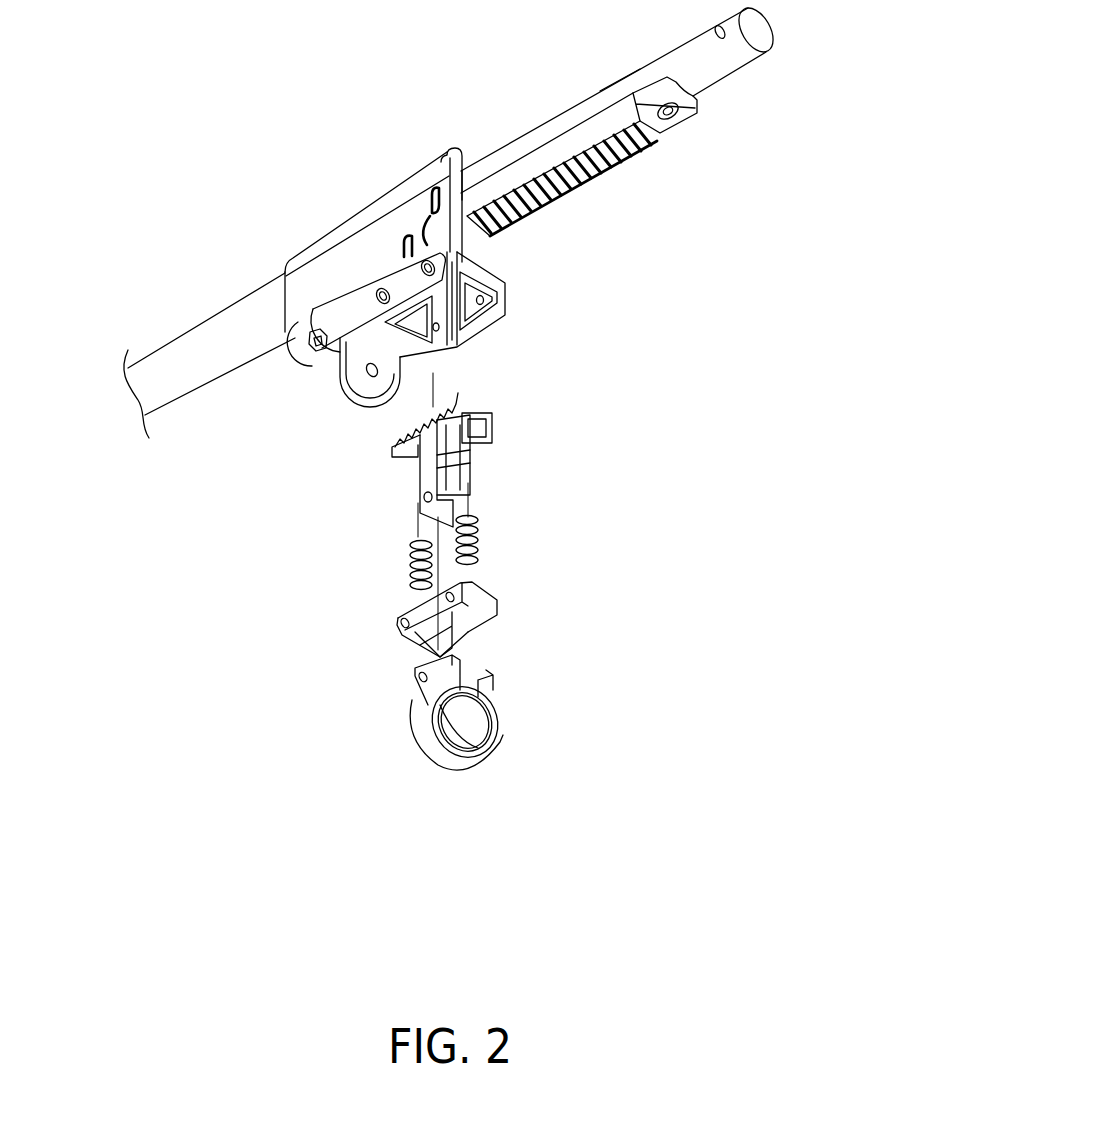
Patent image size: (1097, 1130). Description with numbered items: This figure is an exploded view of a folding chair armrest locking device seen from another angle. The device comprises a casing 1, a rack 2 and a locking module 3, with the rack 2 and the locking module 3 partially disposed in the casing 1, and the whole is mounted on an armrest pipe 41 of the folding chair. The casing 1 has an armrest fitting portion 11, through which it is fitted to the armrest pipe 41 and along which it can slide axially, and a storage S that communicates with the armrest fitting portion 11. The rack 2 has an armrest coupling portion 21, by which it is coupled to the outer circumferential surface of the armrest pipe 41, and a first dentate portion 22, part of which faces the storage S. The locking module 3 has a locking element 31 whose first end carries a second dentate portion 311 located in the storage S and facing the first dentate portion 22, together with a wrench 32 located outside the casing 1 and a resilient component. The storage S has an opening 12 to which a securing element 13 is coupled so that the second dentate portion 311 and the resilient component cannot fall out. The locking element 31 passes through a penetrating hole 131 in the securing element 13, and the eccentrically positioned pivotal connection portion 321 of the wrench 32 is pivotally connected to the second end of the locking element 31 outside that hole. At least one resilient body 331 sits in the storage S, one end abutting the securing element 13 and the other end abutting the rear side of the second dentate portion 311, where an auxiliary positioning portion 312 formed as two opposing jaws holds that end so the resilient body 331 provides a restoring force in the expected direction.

The casing 1 is at (320, 247).
The armrest pipe 41 is at (247, 302).
The armrest fitting portion 11 is at (462, 150).
The opening 12 is at (495, 303).
The storage S is at (452, 312).
The rack 2 is at (525, 157).
The armrest coupling portion 21 is at (617, 102).
The first dentate portion 22 is at (560, 200).
The locking module 3 is at (497, 533).
The locking element 31 is at (428, 480).
The second dentate portion 311 is at (413, 412).
The auxiliary positioning portion 312 is at (493, 437).
The resilient body 331 is at (410, 550).
The securing element 13 is at (418, 605).
The penetrating hole 131 is at (463, 640).
The wrench 32 is at (478, 725).
The pivotal connection portion 321 is at (418, 672).